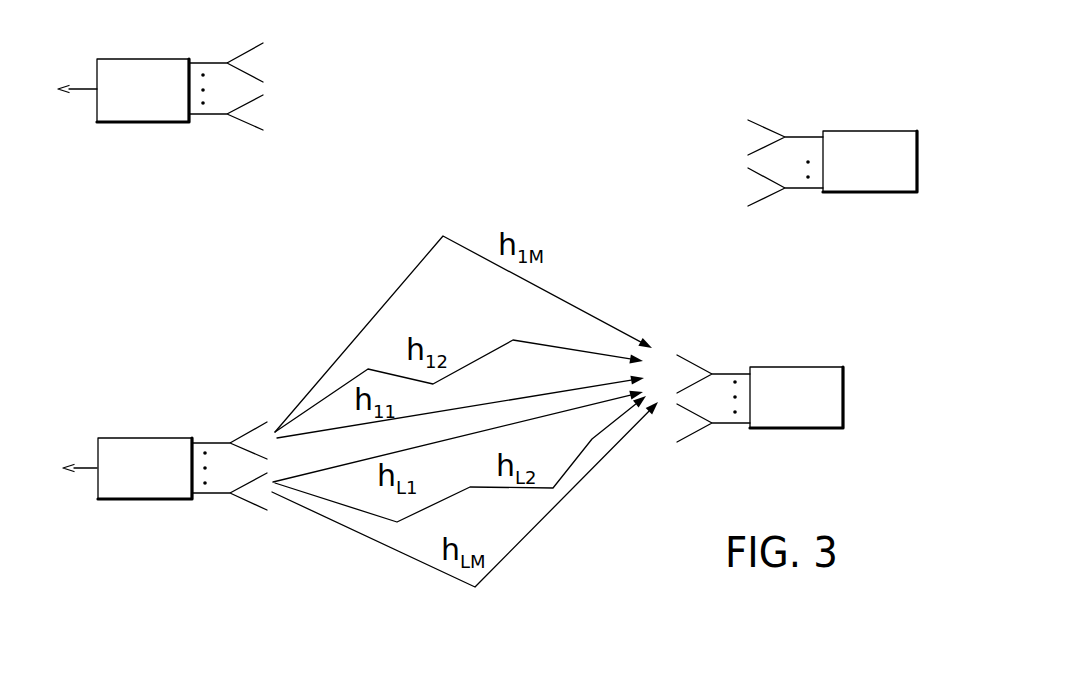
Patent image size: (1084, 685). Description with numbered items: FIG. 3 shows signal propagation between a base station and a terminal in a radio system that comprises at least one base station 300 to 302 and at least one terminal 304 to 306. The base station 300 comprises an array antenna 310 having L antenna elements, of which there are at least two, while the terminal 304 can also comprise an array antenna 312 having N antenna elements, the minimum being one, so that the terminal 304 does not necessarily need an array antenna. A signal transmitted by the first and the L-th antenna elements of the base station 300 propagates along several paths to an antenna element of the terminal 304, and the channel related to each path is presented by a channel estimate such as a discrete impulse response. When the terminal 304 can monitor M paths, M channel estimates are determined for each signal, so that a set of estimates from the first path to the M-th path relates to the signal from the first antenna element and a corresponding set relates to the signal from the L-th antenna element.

The base station 300 is at (168, 438).
The base station 302 is at (167, 59).
The terminal 304 is at (792, 367).
The terminal 306 is at (868, 131).
The array antenna 310 is at (217, 422).
The array antenna 312 is at (712, 363).